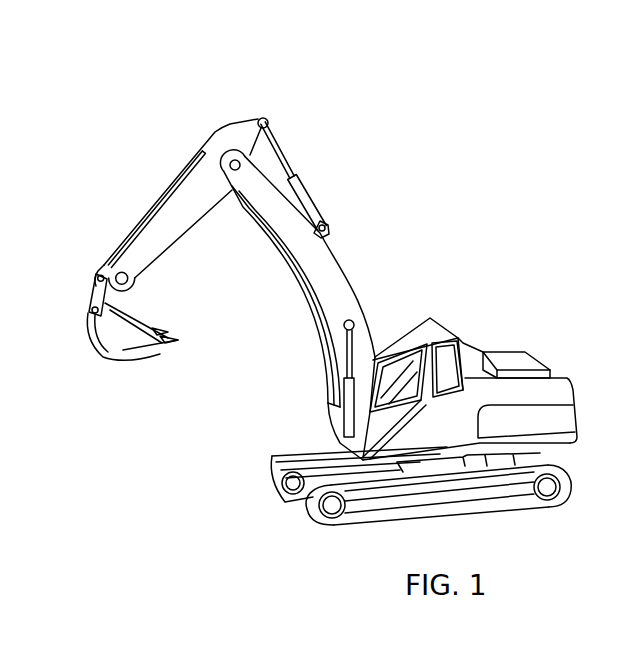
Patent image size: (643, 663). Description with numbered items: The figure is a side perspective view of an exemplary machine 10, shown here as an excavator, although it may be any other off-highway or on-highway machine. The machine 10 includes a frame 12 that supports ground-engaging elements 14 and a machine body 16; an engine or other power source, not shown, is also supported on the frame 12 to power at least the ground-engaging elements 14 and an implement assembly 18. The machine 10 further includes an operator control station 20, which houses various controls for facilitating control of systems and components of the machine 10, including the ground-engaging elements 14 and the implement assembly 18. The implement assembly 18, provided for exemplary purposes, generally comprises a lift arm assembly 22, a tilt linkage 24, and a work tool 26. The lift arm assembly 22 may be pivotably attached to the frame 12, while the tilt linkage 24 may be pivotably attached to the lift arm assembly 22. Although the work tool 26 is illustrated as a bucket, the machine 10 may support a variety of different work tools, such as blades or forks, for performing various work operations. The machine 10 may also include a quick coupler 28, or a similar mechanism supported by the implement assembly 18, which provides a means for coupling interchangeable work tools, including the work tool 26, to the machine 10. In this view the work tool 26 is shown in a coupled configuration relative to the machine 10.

The machine 10 is at (422, 259).
The frame 12 is at (445, 463).
The ground-engaging elements 14 is at (557, 508).
The machine body 16 is at (557, 400).
The implement assembly 18 is at (295, 103).
The operator control station 20 is at (386, 376).
The lift arm assembly 22 is at (350, 231).
The tilt linkage 24 is at (135, 210).
The work tool 26 is at (122, 349).
The quick coupler 28 is at (90, 288).